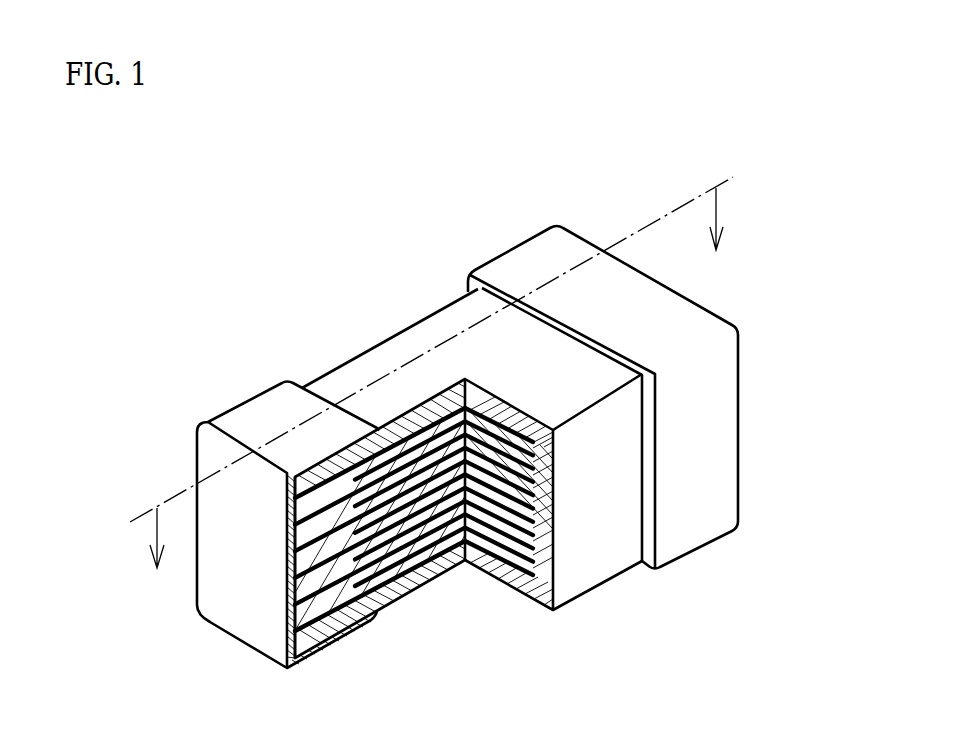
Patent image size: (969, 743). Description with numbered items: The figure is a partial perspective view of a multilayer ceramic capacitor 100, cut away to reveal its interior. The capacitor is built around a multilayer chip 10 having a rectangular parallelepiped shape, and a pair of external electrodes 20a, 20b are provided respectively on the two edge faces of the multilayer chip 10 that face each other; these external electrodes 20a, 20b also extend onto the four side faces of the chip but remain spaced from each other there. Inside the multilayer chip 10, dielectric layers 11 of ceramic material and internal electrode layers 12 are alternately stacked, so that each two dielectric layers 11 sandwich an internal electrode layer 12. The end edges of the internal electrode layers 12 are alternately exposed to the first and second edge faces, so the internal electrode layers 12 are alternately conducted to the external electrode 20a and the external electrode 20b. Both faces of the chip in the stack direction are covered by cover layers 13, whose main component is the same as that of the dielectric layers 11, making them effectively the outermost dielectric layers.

The multilayer ceramic capacitor 100 is at (829, 163).
The multilayer chip 10 is at (337, 345).
The dielectric layer 11 is at (395, 568).
The internal electrode layer 12 is at (423, 548).
The cover layer 13 is at (438, 327).
The external electrode 20a is at (252, 393).
The external electrode 20b is at (517, 262).